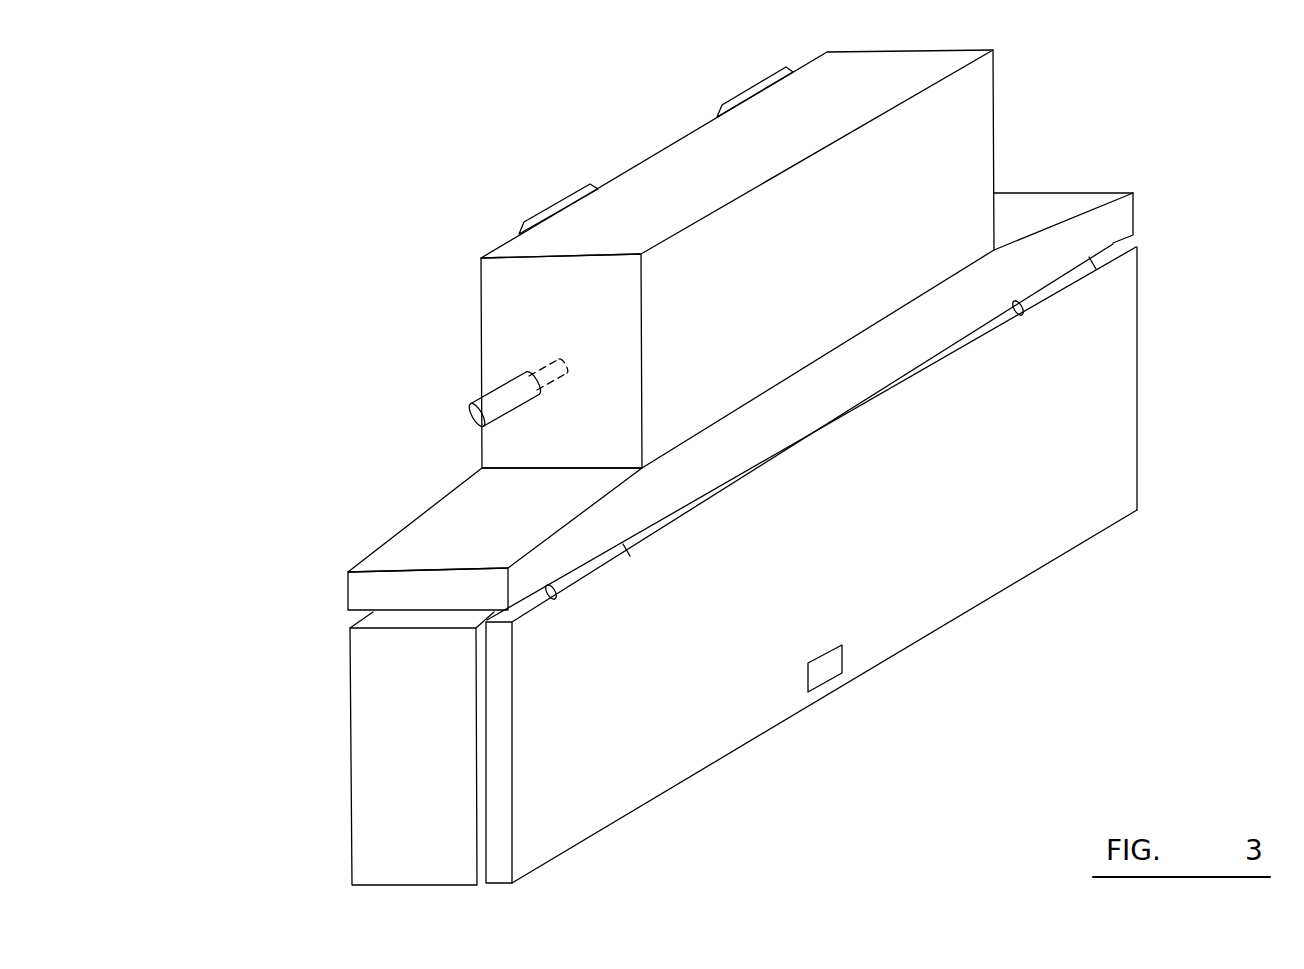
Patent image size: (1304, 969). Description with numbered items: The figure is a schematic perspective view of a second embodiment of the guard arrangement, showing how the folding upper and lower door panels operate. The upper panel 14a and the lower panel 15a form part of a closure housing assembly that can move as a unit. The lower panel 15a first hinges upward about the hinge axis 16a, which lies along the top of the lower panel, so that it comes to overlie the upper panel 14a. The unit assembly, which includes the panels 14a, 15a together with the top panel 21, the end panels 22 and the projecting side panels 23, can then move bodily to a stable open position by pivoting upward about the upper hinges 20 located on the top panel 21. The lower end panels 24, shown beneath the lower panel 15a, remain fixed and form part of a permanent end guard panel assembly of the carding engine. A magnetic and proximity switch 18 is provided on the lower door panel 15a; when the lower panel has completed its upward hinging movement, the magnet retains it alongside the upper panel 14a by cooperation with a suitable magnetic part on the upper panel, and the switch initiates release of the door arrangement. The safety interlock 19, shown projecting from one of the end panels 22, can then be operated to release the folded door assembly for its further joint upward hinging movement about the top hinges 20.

The upper panel 14a is at (623, 250).
The lower panel 15a is at (888, 563).
The hinge axis 16a is at (862, 402).
The magnetic and proximity switch 18 is at (823, 673).
The safety interlock 19 is at (500, 398).
The upper hinges 20 is at (557, 208).
The top panel 21 is at (722, 155).
The end panels 22 is at (510, 320).
The projecting side panels 23 is at (475, 518).
The lower end panels 24 is at (405, 748).